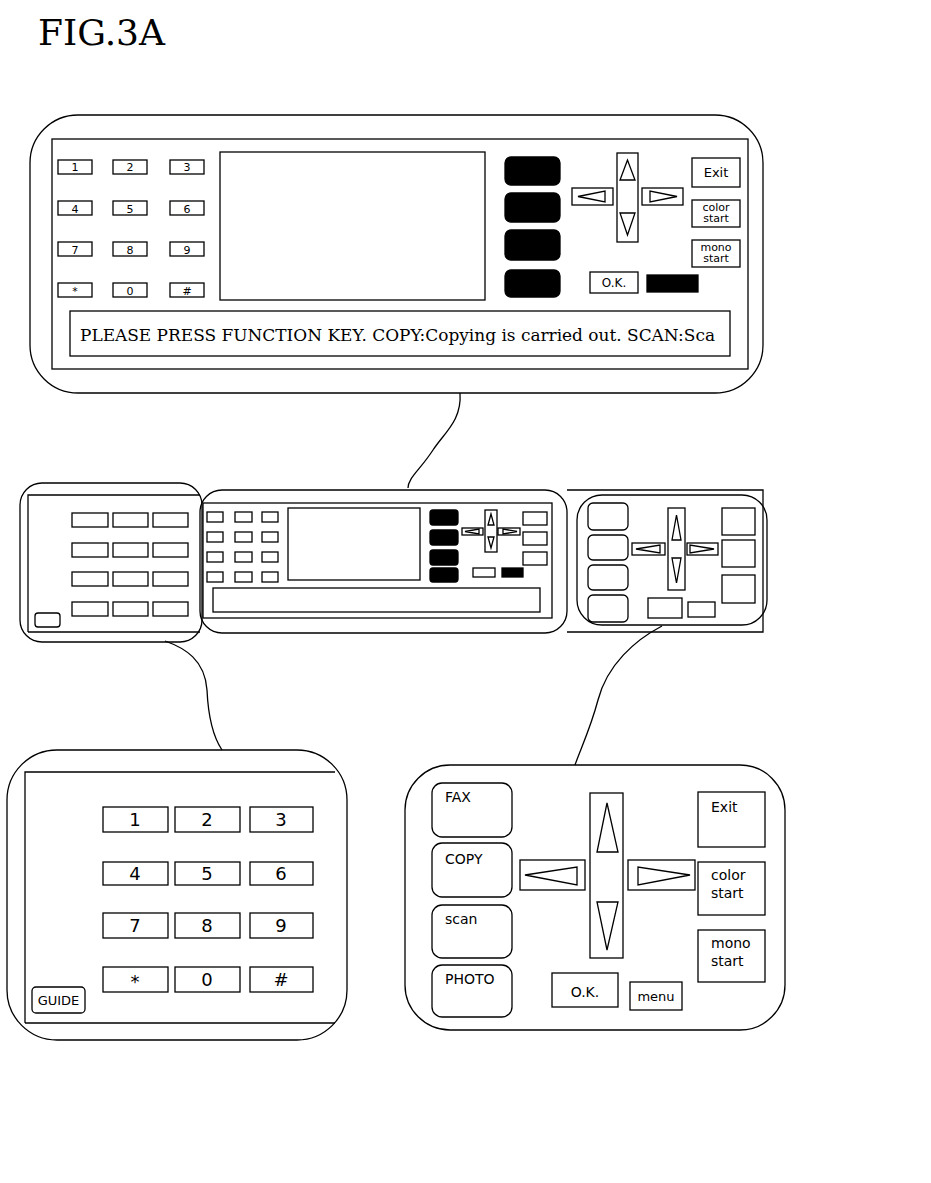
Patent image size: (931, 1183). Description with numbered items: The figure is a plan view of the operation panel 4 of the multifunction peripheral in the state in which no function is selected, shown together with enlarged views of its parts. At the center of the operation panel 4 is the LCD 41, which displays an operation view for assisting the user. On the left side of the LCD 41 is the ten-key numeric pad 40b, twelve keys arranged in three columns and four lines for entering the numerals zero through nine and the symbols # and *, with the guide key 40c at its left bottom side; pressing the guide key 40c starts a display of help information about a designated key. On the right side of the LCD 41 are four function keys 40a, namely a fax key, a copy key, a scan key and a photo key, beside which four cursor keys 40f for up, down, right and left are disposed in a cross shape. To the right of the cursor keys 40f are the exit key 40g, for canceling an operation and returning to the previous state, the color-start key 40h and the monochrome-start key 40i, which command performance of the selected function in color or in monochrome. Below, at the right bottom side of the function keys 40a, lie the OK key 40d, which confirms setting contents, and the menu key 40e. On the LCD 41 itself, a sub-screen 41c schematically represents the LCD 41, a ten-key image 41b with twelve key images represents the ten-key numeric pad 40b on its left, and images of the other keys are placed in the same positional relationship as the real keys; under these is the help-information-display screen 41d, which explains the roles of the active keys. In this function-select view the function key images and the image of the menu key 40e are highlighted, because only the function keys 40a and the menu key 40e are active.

The operation panel 4 is at (659, 439).
The function keys 40a is at (617, 507).
The ten-key numeric pad 40b is at (196, 488).
The guide key 40c is at (50, 622).
The OK key 40d is at (666, 619).
The menu key 40e is at (705, 618).
The cursor keys 40f is at (683, 508).
The exit key 40g is at (755, 522).
The color-start key 40h is at (755, 553).
The monochrome-start key 40i is at (755, 588).
The LCD 41 is at (383, 560).
The ten-key image 41b is at (203, 488).
The sub-screen 41c is at (356, 513).
The help-information-display screen 41d is at (518, 612).